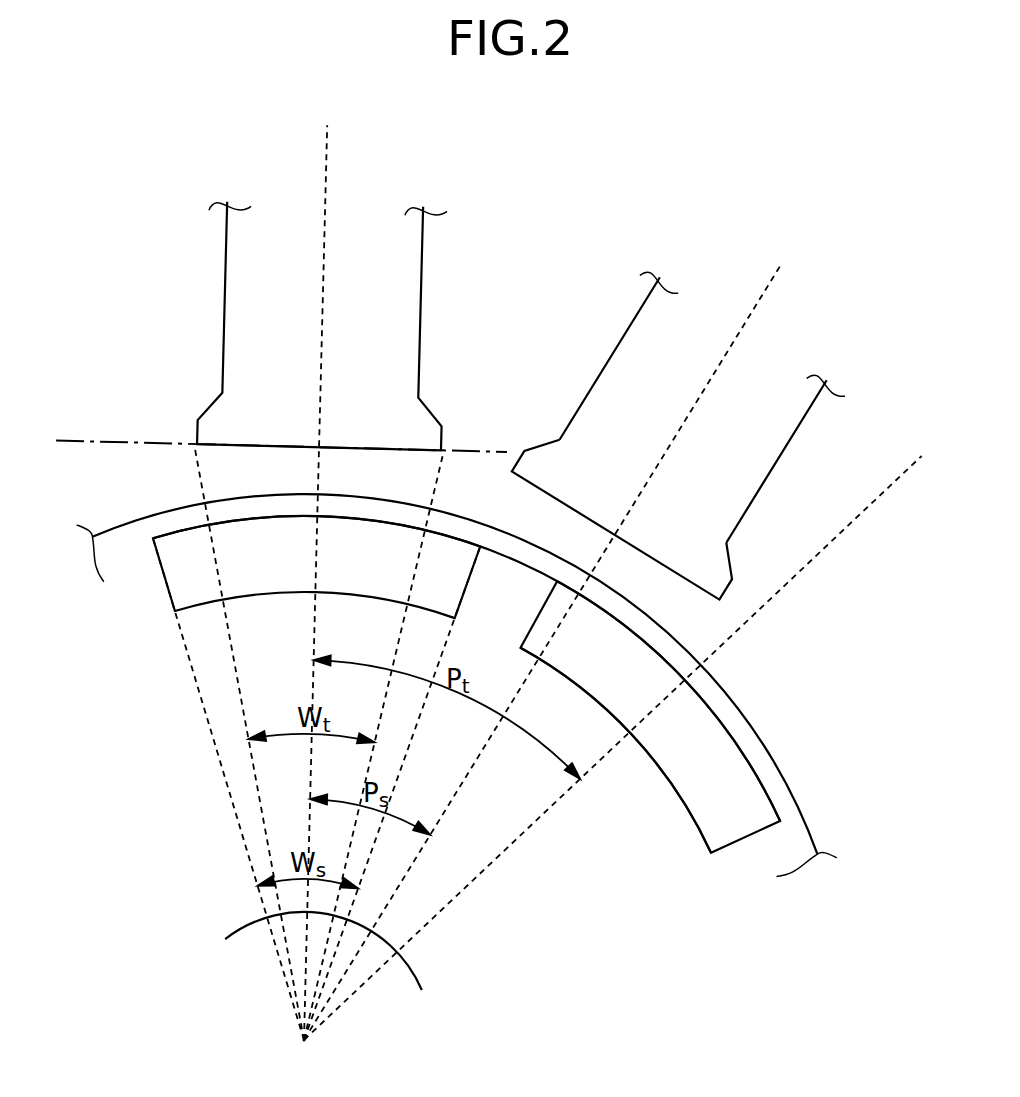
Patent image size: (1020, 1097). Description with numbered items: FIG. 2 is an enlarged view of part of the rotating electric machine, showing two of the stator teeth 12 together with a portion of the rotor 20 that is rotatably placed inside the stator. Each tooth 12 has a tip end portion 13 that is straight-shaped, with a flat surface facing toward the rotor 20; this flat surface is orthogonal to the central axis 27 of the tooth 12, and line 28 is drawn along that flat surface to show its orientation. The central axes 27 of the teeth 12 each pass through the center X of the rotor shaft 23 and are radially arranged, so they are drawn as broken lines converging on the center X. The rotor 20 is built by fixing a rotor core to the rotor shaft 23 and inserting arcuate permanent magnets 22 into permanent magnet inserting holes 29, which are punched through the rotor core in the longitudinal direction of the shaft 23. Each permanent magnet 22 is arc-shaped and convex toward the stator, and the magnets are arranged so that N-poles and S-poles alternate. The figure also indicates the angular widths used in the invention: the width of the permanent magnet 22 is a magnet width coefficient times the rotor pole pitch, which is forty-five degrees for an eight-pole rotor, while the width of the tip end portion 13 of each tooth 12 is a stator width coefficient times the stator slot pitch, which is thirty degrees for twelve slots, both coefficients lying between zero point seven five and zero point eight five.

The teeth 12 is at (684, 434).
The tip end portion 13 is at (658, 556).
The rotor 20 is at (757, 733).
The permanent magnets 22 is at (733, 825).
The rotor shaft 23 is at (408, 979).
The central axis 27 is at (327, 254).
The tooth tip face line 28 is at (122, 443).
The permanent magnet inserting holes 29 is at (657, 770).
The center X is at (306, 1044).